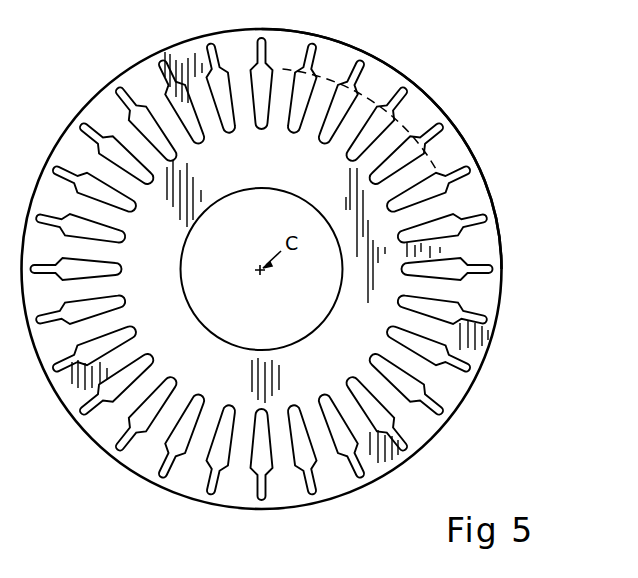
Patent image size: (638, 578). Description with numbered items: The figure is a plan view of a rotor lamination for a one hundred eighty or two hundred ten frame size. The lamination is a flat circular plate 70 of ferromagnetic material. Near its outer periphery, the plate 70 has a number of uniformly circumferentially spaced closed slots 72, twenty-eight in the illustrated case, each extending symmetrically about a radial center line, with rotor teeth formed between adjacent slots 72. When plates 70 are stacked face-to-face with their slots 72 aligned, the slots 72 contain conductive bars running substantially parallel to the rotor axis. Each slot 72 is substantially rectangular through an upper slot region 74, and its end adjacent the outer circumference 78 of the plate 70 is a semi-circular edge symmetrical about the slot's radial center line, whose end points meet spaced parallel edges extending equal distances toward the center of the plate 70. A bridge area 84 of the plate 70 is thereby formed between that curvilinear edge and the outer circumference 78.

The plate 70 is at (487, 238).
The closed slots 72 is at (422, 346).
The upper slot region 74 is at (378, 102).
The outer circumference 78 is at (437, 108).
The bridge area 84 is at (443, 126).